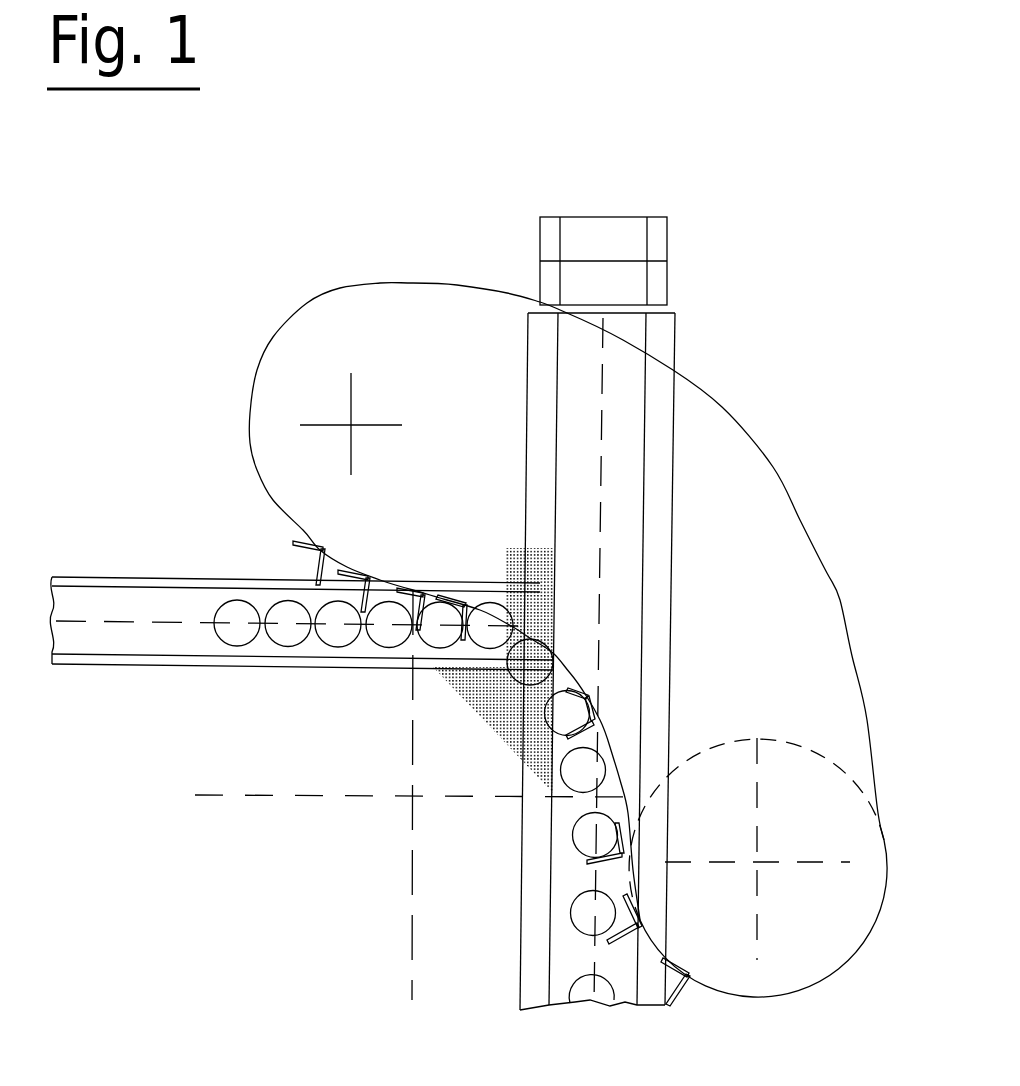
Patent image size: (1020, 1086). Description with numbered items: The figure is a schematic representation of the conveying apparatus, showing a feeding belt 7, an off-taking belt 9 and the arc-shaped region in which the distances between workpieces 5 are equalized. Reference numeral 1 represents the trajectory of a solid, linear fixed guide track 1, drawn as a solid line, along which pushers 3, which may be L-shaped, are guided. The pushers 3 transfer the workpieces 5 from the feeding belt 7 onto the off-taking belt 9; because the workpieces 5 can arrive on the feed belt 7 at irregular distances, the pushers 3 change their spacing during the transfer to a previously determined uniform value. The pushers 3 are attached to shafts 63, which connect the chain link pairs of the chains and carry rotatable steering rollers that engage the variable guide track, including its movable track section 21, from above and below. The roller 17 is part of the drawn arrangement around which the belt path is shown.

The guide track 1 is at (723, 406).
The pushers 3 is at (680, 1000).
The workpieces 5 is at (572, 782).
The feeding belt 7 is at (537, 955).
The off-taking belt 9 is at (153, 660).
The roller 17 is at (746, 735).
The movable track section 21 is at (600, 655).
The shafts 63 is at (676, 965).